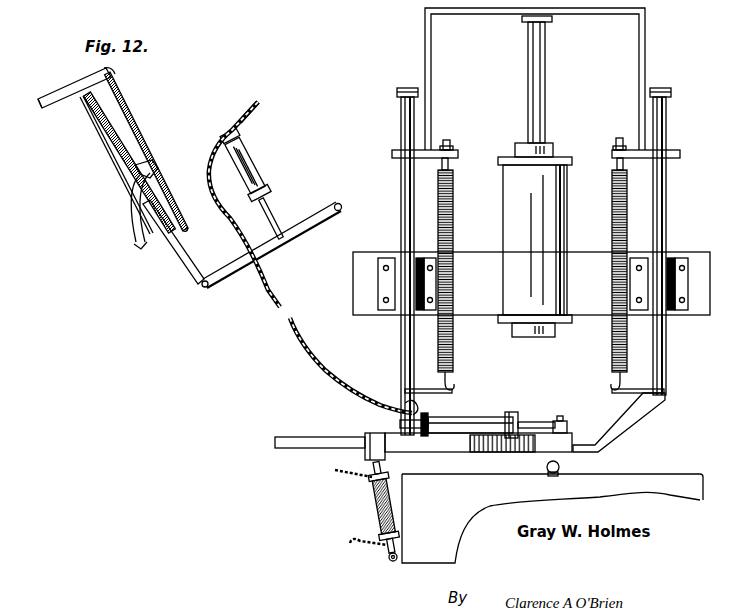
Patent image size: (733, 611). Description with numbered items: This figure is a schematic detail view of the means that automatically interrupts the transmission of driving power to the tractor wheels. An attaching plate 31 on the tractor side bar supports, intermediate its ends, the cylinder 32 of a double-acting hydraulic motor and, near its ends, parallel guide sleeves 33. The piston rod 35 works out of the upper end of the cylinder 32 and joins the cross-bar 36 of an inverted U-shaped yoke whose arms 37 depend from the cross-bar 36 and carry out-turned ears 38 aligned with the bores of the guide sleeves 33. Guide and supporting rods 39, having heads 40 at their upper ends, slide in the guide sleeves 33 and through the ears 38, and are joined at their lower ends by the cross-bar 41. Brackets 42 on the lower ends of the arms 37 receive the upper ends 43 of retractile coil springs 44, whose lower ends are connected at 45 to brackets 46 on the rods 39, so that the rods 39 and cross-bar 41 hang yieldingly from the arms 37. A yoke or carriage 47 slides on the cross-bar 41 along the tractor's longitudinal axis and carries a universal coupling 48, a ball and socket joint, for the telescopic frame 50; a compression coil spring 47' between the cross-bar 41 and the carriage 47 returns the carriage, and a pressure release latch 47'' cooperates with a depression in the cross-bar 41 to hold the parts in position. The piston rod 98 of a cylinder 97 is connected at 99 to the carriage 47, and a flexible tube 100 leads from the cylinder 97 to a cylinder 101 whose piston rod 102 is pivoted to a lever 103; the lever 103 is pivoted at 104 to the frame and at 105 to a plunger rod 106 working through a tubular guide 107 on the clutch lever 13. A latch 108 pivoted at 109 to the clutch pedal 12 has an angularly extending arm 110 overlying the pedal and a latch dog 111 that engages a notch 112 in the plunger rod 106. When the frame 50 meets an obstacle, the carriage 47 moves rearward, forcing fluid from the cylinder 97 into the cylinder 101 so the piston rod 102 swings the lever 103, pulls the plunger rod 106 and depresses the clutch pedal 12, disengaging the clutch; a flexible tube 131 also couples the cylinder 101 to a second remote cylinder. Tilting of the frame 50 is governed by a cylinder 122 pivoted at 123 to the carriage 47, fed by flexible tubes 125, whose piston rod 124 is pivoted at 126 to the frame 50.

The angularly extending arm 110 is at (62, 90).
The clutch pedal 12 is at (60, 112).
The latch pivot 109 is at (118, 74).
The latch 108 is at (150, 128).
The clutch lever 13 is at (99, 142).
The tubular guide 107 is at (120, 172).
The latch dog 111 is at (160, 172).
The notch 112 is at (140, 176).
The plunger rod 106 is at (180, 247).
The plunger pivot 105 is at (205, 290).
The frame pivot 104 is at (342, 208).
The lever 103 is at (296, 243).
The piston rod 102 is at (272, 215).
The cylinder 101 is at (240, 160).
The flexible tube 131 is at (246, 108).
The flexible tube 100 is at (302, 338).
The cross-bar 36 is at (494, 14).
The piston rod 35 is at (546, 72).
The arms 37 is at (433, 123).
The heads 40 is at (404, 89).
The upper ends of springs 43 is at (446, 146).
The brackets 42 is at (453, 156).
The out-turned ears 38 is at (396, 158).
The guide and supporting rods 39 is at (402, 212).
The cylinder 32 is at (505, 213).
The retractile coil springs 44 is at (455, 237).
The attaching plate 31 is at (582, 262).
The guide sleeves 33 is at (395, 282).
The brackets 46 is at (416, 388).
The lower spring connections 45 is at (455, 388).
The cylinder 97 is at (462, 420).
The compression coil spring 47' is at (502, 419).
The piston rod 98 is at (533, 422).
The piston rod connection 99 is at (590, 412).
The pressure release latch 47'' is at (619, 422).
The cross-bar 41 is at (278, 437).
The cylinder pivot 123 is at (372, 460).
The flexible tubes 125 is at (334, 470).
The cylinder 122 is at (373, 497).
The piston rod 124 is at (389, 552).
The piston rod pivot 126 is at (394, 562).
The yoke or carriage 47 is at (478, 472).
The universal coupling 48 is at (560, 463).
The telescopic frame 50 is at (667, 472).